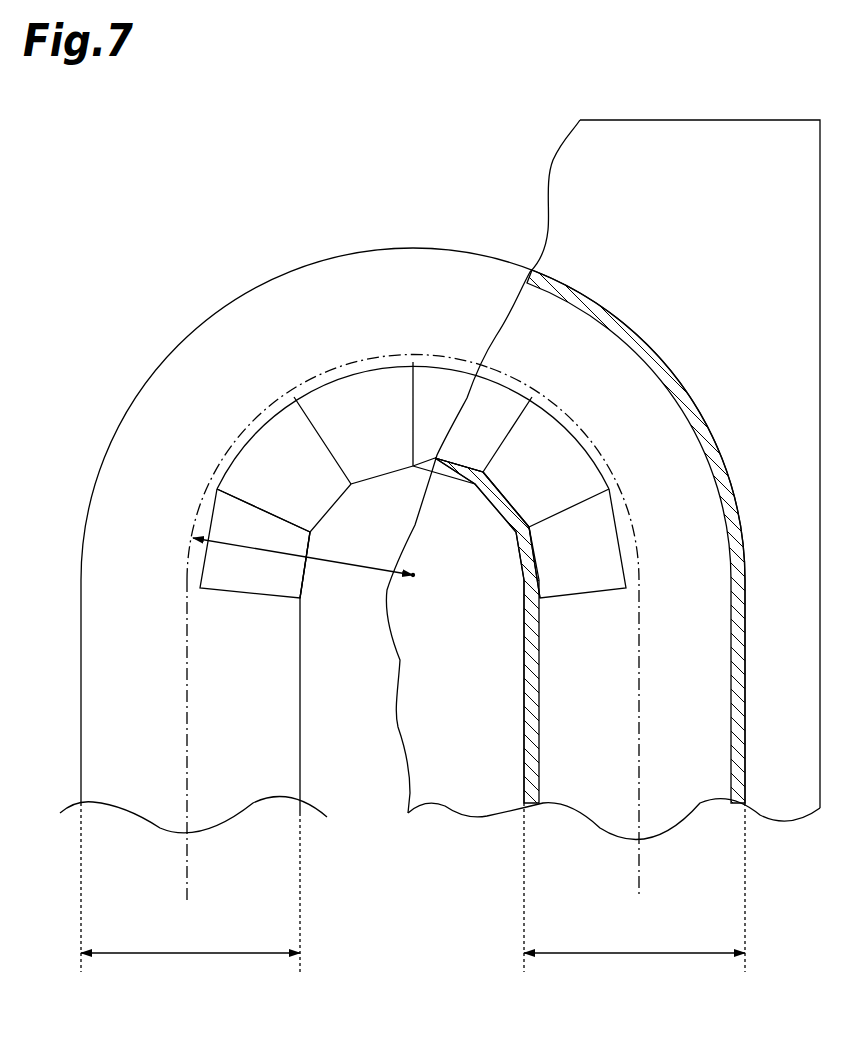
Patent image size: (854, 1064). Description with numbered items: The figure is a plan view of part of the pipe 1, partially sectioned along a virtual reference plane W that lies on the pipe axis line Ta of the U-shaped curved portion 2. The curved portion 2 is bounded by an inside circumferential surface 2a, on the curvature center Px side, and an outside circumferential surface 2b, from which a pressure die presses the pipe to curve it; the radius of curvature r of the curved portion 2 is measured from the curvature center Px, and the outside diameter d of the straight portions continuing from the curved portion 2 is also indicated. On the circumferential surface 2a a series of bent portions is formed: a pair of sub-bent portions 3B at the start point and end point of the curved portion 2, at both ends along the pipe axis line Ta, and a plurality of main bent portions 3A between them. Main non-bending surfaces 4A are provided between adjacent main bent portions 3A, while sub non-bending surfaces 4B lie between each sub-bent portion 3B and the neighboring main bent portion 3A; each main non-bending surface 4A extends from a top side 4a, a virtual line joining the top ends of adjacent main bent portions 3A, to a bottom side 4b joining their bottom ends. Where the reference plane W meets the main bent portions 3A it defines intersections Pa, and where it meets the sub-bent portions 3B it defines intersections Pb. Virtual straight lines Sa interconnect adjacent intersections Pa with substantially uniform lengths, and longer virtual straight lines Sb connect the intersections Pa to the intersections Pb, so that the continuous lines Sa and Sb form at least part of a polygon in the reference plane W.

The pipe 1 is at (136, 392).
The curved portion 2 is at (345, 256).
The circumferential surface 2a is at (392, 482).
The outside circumferential surface 2b is at (248, 292).
The main bent portions 3A is at (323, 430).
The sub-bent portions 3B is at (230, 596).
The main non-bending surfaces 4A is at (313, 541).
The sub non-bending surfaces 4B is at (308, 575).
The top side 4a is at (383, 354).
The bottom side 4b is at (566, 426).
The pipe axis line Ta is at (188, 683).
The virtual straight lines Sa is at (490, 507).
The virtual straight lines Sb is at (538, 570).
The intersections Pa is at (480, 495).
The intersections Pb is at (523, 598).
The curvature center Px is at (414, 578).
The reference plane W is at (690, 118).
The radius of curvature r is at (303, 552).
The outside diameter d is at (413, 896).